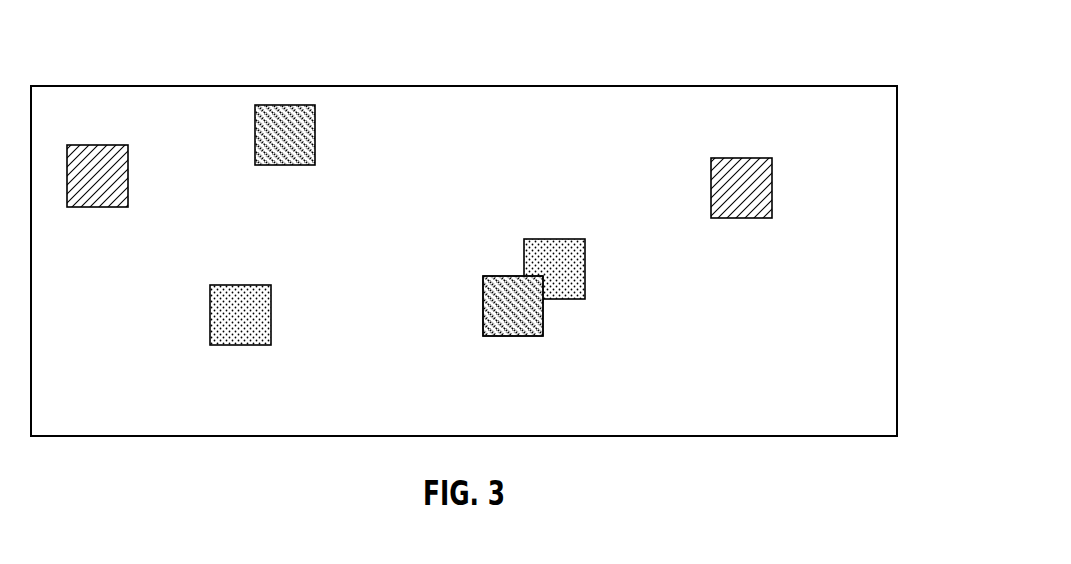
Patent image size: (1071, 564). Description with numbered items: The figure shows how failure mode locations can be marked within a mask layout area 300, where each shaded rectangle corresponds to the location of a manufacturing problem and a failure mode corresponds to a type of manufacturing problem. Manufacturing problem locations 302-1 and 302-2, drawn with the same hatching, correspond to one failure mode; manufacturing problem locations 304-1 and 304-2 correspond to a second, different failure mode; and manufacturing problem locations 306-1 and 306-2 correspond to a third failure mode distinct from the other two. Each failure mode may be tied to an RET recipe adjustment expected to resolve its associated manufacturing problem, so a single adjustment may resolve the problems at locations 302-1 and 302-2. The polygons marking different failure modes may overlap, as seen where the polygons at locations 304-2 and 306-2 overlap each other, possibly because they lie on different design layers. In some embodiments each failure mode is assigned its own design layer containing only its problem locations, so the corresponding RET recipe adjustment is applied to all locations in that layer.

The mask layout area 300 is at (695, 87).
The manufacturing problem location 302-1 is at (142, 128).
The manufacturing problem location 302-2 is at (787, 135).
The manufacturing problem location 304-1 is at (315, 165).
The manufacturing problem location 304-2 is at (483, 290).
The manufacturing problem location 306-1 is at (210, 286).
The manufacturing problem location 306-2 is at (603, 222).